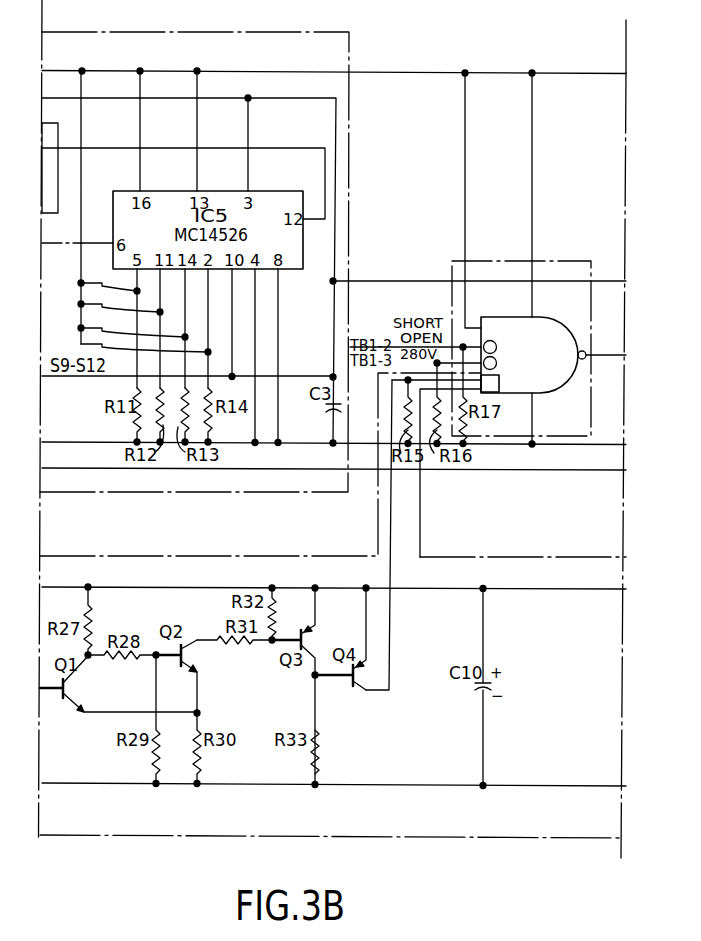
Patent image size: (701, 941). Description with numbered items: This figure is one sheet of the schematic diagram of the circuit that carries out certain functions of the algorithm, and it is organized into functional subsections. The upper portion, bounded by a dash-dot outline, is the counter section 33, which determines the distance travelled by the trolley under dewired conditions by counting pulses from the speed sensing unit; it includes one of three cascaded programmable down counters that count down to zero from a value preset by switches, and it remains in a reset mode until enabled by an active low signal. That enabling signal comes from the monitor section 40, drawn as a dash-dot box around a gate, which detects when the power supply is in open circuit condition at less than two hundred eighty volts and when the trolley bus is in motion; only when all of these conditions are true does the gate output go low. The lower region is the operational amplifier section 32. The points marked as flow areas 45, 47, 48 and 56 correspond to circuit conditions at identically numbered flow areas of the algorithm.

The operational amplifier section 32 is at (222, 556).
The counter section 33 is at (257, 28).
The monitor section 40 is at (468, 262).
The flow area 45 is at (387, 281).
The flow area 47 is at (497, 341).
The flow area 48 is at (388, 518).
The gate input terminal 56 is at (499, 386).